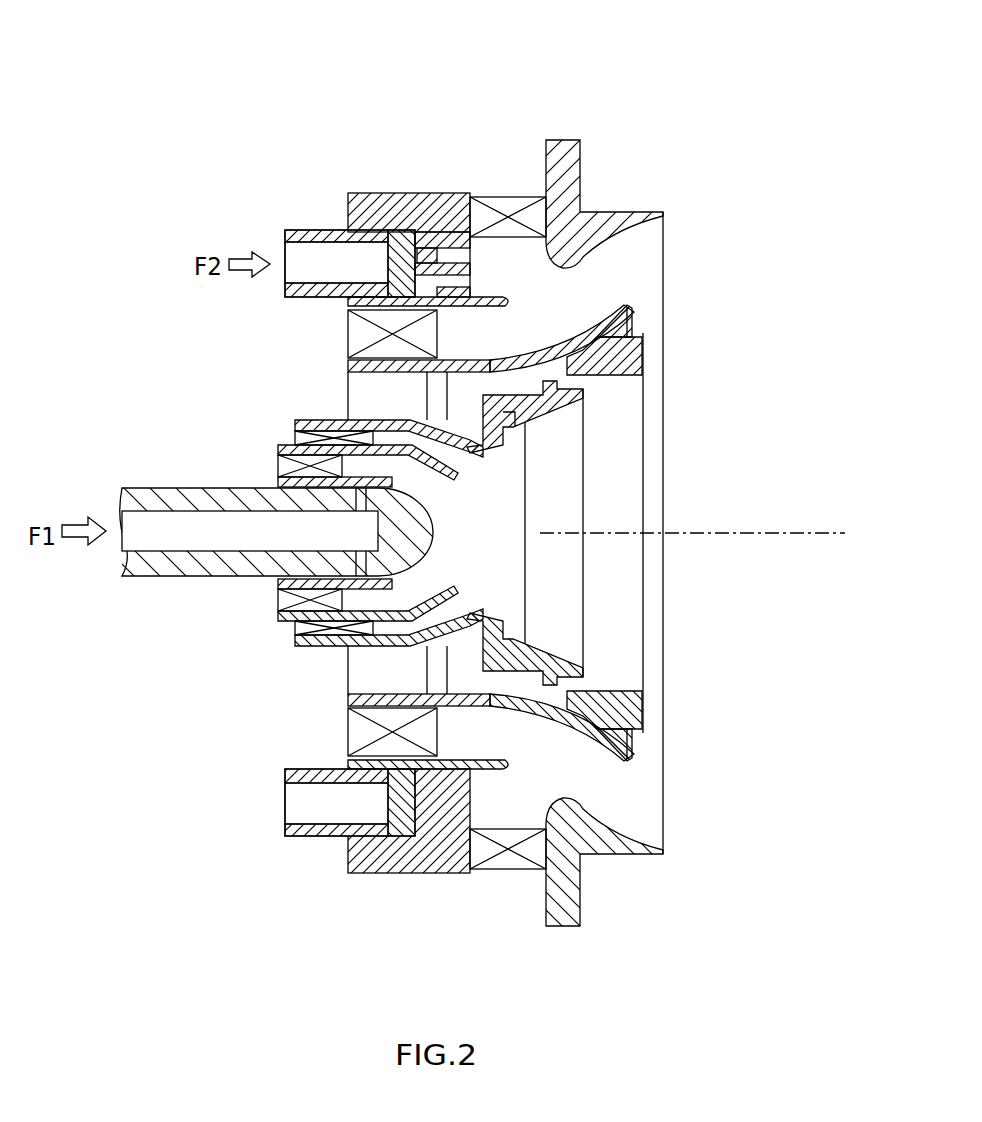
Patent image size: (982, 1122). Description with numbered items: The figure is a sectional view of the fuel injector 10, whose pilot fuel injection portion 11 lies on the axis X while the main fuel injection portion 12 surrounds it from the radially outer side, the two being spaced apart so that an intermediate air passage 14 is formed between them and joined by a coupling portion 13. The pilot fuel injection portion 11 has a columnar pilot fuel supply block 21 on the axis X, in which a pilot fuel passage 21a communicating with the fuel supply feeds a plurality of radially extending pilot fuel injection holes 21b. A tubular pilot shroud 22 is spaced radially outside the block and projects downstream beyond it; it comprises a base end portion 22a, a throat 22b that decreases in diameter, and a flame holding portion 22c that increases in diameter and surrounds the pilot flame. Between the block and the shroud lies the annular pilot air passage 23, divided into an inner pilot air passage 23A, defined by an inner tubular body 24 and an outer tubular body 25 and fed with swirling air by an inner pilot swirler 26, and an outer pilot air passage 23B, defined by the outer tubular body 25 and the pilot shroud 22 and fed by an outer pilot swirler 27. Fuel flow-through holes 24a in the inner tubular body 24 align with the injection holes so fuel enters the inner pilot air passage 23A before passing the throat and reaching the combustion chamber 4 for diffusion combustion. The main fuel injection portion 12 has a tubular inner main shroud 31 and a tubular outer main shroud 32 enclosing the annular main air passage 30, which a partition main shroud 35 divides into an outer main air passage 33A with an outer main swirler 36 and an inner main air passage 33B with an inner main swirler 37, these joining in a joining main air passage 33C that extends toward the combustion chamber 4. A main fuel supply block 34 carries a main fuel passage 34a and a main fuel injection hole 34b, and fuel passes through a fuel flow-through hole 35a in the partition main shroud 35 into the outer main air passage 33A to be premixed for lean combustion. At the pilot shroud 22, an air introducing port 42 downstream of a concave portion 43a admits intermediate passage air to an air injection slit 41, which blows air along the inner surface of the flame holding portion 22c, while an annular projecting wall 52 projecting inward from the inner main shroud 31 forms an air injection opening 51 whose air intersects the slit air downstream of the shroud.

The fuel injector 10 is at (734, 118).
The pilot fuel injection portion 11 is at (618, 516).
The main fuel injection portion 12 is at (678, 244).
The coupling portion 13 is at (410, 690).
The intermediate air passage 14 is at (388, 396).
The pilot fuel supply block 21 is at (122, 580).
The pilot fuel passage 21a is at (192, 542).
The pilot fuel injection holes 21b is at (436, 534).
The pilot shroud 22 is at (590, 397).
The base end portion 22a is at (320, 415).
The throat 22b is at (488, 452).
The flame holding portion 22c is at (585, 424).
The pilot air passage 23 is at (210, 640).
The inner pilot air passage 23A is at (300, 628).
The outer pilot air passage 23B is at (345, 653).
The inner tubular body 24 is at (277, 481).
The fuel flow-through holes 24a is at (400, 579).
The outer tubular body 25 is at (277, 452).
The inner pilot swirler 26 is at (277, 470).
The outer pilot swirler 27 is at (300, 433).
The main air passage 30 is at (562, 287).
The inner main shroud 31 is at (630, 297).
The outer main shroud 32 is at (622, 210).
The outer main air passage 33A is at (518, 832).
The inner main air passage 33B is at (465, 860).
The joining main air passage 33C is at (607, 777).
The main fuel supply block 34 is at (330, 255).
The main fuel passage 34a is at (332, 260).
The main fuel injection hole 34b is at (453, 263).
The partition main shroud 35 is at (387, 190).
The fuel flow-through hole 35a is at (457, 268).
The outer main swirler 36 is at (510, 200).
The inner main swirler 37 is at (357, 322).
The air injection slit 41 is at (535, 432).
The air introducing port 42 is at (490, 415).
The concave portion 43a is at (470, 410).
The air injection opening 51 is at (630, 375).
The annular projecting wall 52 is at (630, 332).
The combustion chamber 4 is at (835, 483).
The axis X is at (820, 538).